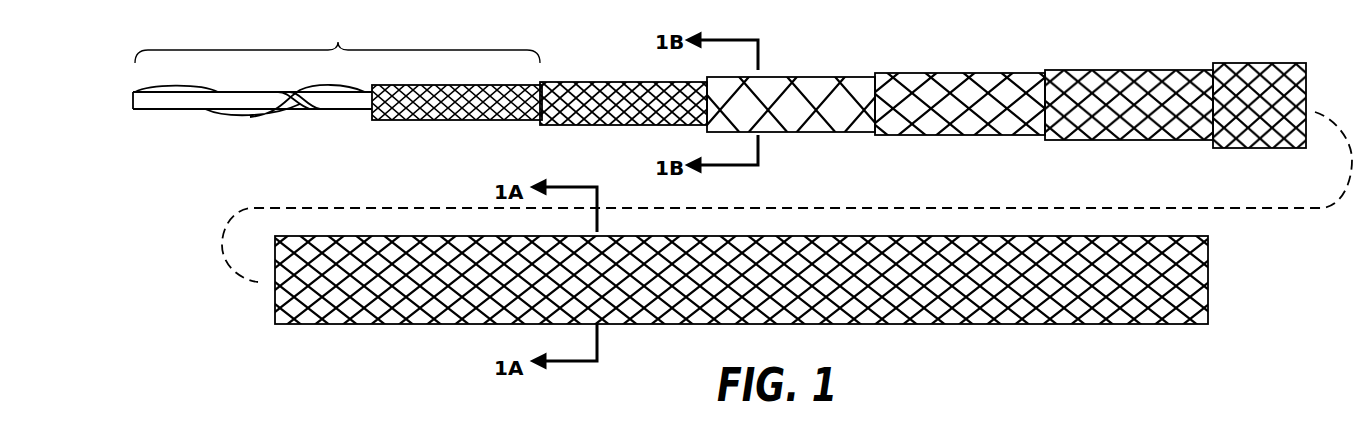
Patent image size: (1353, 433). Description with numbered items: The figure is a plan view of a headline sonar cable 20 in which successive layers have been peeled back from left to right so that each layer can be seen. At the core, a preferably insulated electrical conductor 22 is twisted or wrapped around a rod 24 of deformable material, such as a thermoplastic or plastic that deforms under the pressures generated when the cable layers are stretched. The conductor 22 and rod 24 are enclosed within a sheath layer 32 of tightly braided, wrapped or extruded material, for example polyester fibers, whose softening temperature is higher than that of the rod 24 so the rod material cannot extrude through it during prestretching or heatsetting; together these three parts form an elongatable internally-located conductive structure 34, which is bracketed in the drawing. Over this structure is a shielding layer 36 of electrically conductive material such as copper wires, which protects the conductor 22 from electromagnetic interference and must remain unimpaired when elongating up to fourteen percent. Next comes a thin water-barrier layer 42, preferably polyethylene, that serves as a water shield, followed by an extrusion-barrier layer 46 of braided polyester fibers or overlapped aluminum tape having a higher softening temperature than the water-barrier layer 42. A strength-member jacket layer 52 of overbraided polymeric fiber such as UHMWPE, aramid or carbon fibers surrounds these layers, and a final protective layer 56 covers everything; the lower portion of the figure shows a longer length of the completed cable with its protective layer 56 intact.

The headline sonar cable 20 is at (1176, 336).
The insulated electrical conductor 22 is at (246, 112).
The rod of deformable material 24 is at (236, 92).
The sheath layer 32 is at (445, 85).
The elongatable internally-located conductive structure 34 is at (337, 39).
The shielding layer 36 is at (573, 126).
The water-barrier layer 42 is at (785, 77).
The extrusion-barrier layer 46 is at (943, 137).
The strength-member jacket layer 52 is at (1118, 70).
The protective layer 56 is at (1240, 150).